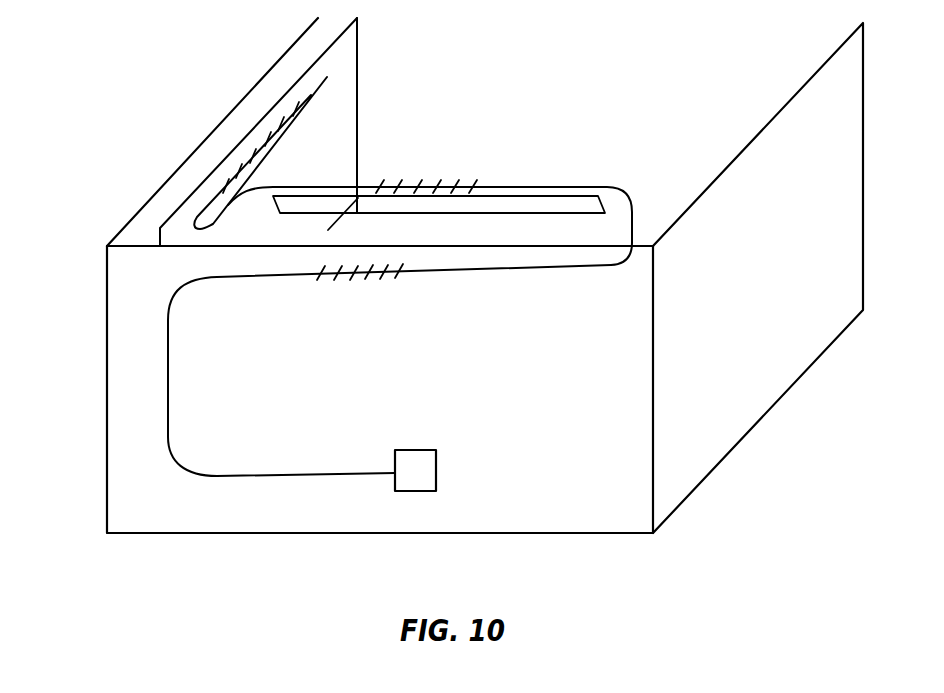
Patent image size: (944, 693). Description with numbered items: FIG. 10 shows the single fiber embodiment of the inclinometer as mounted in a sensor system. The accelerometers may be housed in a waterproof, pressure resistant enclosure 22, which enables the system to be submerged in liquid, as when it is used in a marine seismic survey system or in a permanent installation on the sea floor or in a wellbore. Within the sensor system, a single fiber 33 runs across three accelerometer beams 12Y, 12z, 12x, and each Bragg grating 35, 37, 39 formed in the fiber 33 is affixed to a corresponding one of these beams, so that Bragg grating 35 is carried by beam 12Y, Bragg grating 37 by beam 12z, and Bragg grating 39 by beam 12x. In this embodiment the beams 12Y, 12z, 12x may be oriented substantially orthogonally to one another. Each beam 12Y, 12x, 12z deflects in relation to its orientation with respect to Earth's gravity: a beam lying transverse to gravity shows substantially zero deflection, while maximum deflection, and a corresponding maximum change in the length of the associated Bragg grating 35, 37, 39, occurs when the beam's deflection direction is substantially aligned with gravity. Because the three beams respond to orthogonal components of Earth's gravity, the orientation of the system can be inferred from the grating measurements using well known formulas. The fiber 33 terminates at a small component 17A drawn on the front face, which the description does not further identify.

The enclosure 22 is at (730, 420).
The accelerometer beam 12x is at (197, 397).
The accelerometer beam 12Y is at (348, 68).
The accelerometer beam 12z is at (510, 203).
The fiber 33 is at (310, 92).
The Bragg grating 35 is at (280, 127).
The Bragg grating 37 is at (413, 180).
The Bragg grating 39 is at (348, 276).
The sensor 17A is at (437, 471).